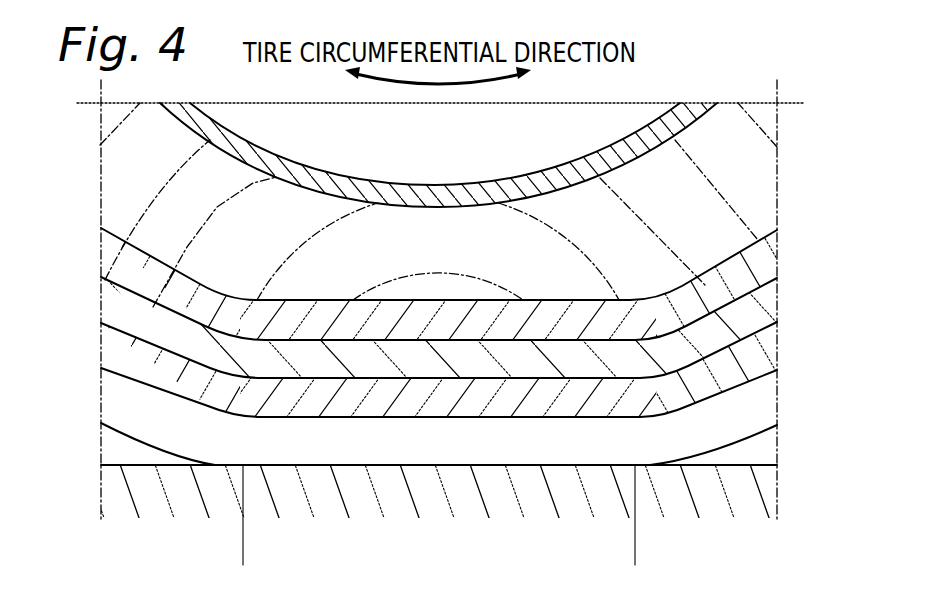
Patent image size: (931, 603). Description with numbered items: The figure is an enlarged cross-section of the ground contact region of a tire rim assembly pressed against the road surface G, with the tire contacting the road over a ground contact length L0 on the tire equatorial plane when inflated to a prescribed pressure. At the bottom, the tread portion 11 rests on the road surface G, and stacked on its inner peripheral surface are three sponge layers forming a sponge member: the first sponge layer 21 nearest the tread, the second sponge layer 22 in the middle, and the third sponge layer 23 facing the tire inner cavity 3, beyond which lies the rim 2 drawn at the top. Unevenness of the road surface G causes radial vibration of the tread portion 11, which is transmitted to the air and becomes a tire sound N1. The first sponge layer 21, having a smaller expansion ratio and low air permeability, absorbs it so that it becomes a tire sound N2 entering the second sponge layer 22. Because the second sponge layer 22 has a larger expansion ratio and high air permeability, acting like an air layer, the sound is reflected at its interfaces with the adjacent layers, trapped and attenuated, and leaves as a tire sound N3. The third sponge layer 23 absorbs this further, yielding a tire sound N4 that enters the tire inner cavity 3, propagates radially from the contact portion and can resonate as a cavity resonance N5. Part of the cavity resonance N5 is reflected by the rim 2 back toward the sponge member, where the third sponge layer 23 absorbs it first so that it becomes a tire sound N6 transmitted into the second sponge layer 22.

The rim 2 is at (437, 186).
The tire inner cavity 3 is at (457, 255).
The tread portion 11 is at (653, 453).
The first sponge layer 21 is at (232, 419).
The second sponge layer 22 is at (209, 301).
The third sponge layer 23 is at (151, 253).
The road surface G is at (454, 510).
The ground contact length L0 is at (632, 555).
The tire sound N1 is at (339, 409).
The tire sound N2 is at (423, 405).
The tire sound N3 is at (341, 355).
The tire sound N4 is at (421, 275).
The cavity resonance N5 is at (590, 278).
The tire sound N6 is at (519, 320).